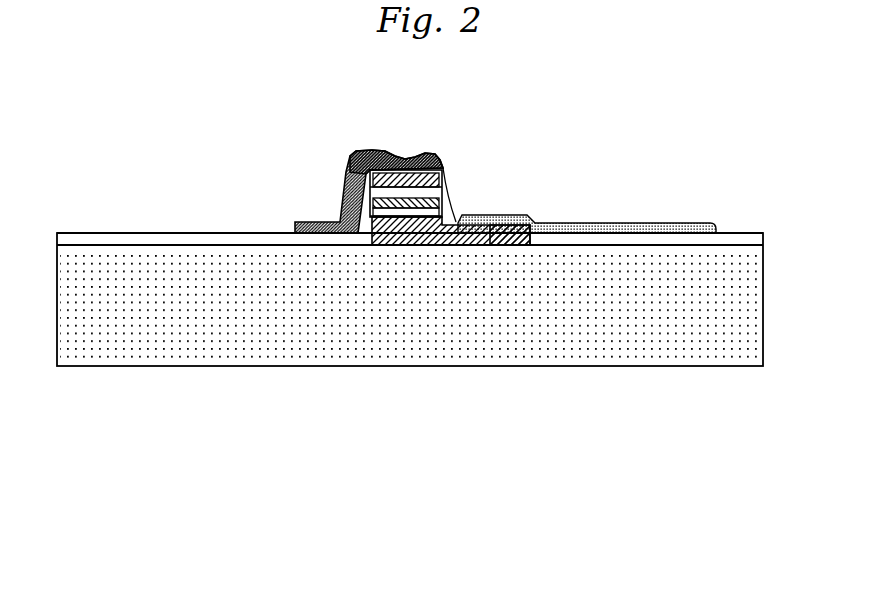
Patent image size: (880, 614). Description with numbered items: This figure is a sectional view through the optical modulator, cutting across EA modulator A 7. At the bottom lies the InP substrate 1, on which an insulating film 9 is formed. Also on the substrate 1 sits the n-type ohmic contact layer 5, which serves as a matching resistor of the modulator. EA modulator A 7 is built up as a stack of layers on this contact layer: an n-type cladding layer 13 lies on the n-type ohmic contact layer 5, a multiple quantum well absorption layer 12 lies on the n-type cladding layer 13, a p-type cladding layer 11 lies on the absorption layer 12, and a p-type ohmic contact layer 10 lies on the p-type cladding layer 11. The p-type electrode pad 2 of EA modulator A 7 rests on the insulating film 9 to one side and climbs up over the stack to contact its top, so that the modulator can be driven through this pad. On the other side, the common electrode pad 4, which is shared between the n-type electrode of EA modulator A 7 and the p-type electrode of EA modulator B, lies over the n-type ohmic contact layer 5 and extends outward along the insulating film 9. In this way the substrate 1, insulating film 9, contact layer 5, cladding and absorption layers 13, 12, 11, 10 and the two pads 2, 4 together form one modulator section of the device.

The InP substrate 1 is at (132, 277).
The insulating film 9 is at (205, 232).
The p-type electrode pad 2 is at (313, 222).
The EA modulator A 7 is at (411, 152).
The p-type ohmic contact layer 10 is at (440, 166).
The p-type cladding layer 11 is at (433, 197).
The multiple quantum well absorption layer 12 is at (433, 210).
The n-type cladding layer 13 is at (422, 217).
The n-type ohmic contact layer 5 is at (485, 245).
The common electrode pad 4 is at (619, 220).